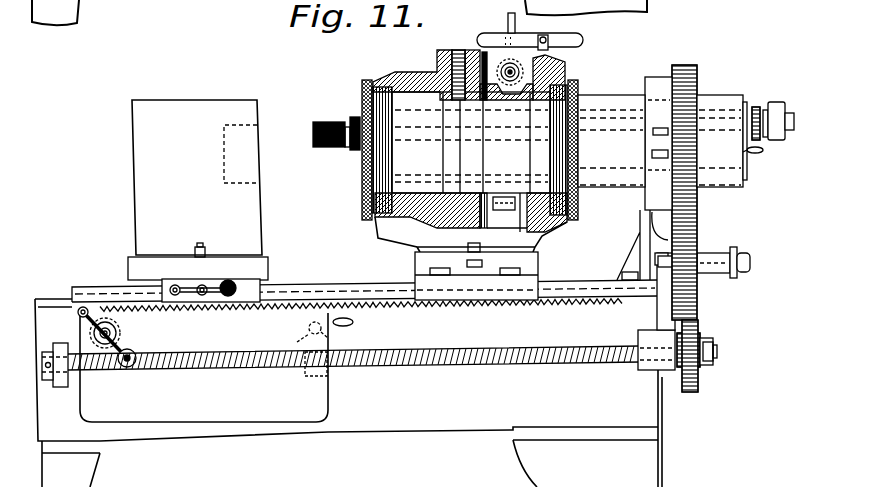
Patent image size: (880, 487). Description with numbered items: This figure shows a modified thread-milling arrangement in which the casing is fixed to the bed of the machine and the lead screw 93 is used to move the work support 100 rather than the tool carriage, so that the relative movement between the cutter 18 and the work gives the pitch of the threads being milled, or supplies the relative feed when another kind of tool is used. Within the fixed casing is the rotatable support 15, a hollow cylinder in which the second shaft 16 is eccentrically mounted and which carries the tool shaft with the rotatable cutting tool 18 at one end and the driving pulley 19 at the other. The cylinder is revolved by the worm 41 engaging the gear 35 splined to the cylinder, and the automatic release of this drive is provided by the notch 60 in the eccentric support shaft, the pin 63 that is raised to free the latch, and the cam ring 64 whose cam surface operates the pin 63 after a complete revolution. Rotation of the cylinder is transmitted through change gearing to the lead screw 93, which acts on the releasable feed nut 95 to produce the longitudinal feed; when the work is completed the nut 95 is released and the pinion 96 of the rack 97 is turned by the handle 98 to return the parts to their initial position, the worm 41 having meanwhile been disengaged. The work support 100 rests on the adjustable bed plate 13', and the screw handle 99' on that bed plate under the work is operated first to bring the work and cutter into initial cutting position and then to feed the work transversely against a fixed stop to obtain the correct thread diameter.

The adjustable bed plate 13' is at (365, 282).
The rotatable support 15 is at (747, 173).
The second shaft 16 is at (751, 158).
The rotatable cutting tool 18 is at (325, 121).
The pulley 19 is at (776, 102).
The worm gear 35 is at (536, 246).
The worm 41 is at (540, 36).
The notch 60 is at (506, 62).
The pin 63 is at (460, 50).
The cam ring 64 is at (483, 198).
The lead screw 93 is at (423, 365).
The releasable feed nut 95 is at (297, 342).
The pinion 96 is at (121, 338).
The rack 97 is at (434, 307).
The handle 98 is at (84, 306).
The screw handle 99' is at (209, 309).
The work support 100 is at (157, 272).